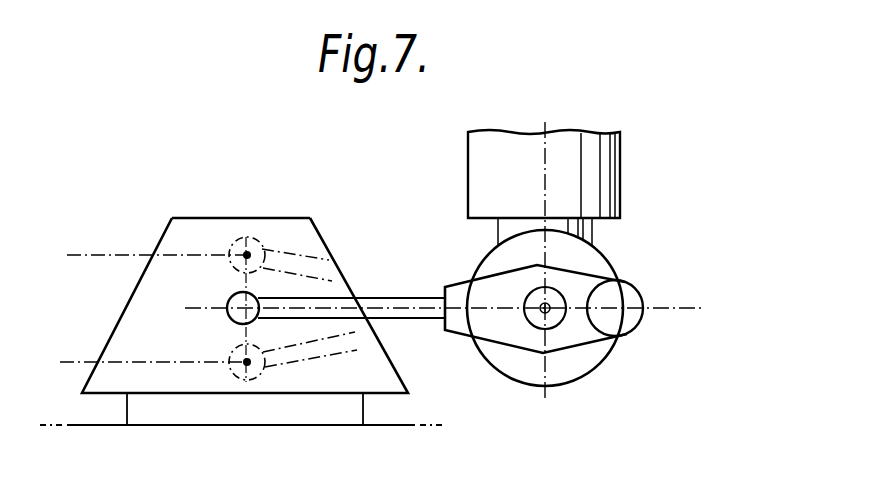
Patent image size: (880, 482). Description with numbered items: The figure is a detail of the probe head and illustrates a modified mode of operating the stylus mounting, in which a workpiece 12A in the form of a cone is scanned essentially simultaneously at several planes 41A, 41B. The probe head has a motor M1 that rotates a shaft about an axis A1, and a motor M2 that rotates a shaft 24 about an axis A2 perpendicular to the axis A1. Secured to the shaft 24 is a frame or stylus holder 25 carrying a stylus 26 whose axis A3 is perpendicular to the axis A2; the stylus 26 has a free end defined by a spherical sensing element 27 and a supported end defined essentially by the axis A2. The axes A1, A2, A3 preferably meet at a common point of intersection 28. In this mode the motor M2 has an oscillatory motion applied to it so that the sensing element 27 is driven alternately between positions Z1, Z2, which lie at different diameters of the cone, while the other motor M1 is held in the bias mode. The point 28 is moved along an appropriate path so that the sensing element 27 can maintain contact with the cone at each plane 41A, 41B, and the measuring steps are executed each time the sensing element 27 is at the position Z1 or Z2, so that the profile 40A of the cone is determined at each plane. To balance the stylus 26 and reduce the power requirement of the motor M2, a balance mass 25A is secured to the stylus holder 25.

The workpiece 12A is at (236, 218).
The profile 40A is at (207, 232).
The plane 41A is at (97, 255).
The plane 41B is at (80, 362).
The position Z1 is at (248, 255).
The position Z2 is at (246, 382).
The spherical sensing element 27 is at (232, 316).
The stylus 26 is at (376, 298).
The axis A3 is at (432, 308).
The axis A1 is at (550, 140).
The motor M1 is at (607, 177).
The shaft 24 is at (558, 320).
The motor M2 is at (558, 374).
The axis A2 is at (542, 316).
The common point of intersection 28 is at (542, 316).
The stylus holder 25 is at (466, 322).
The balance mass 25A is at (628, 293).